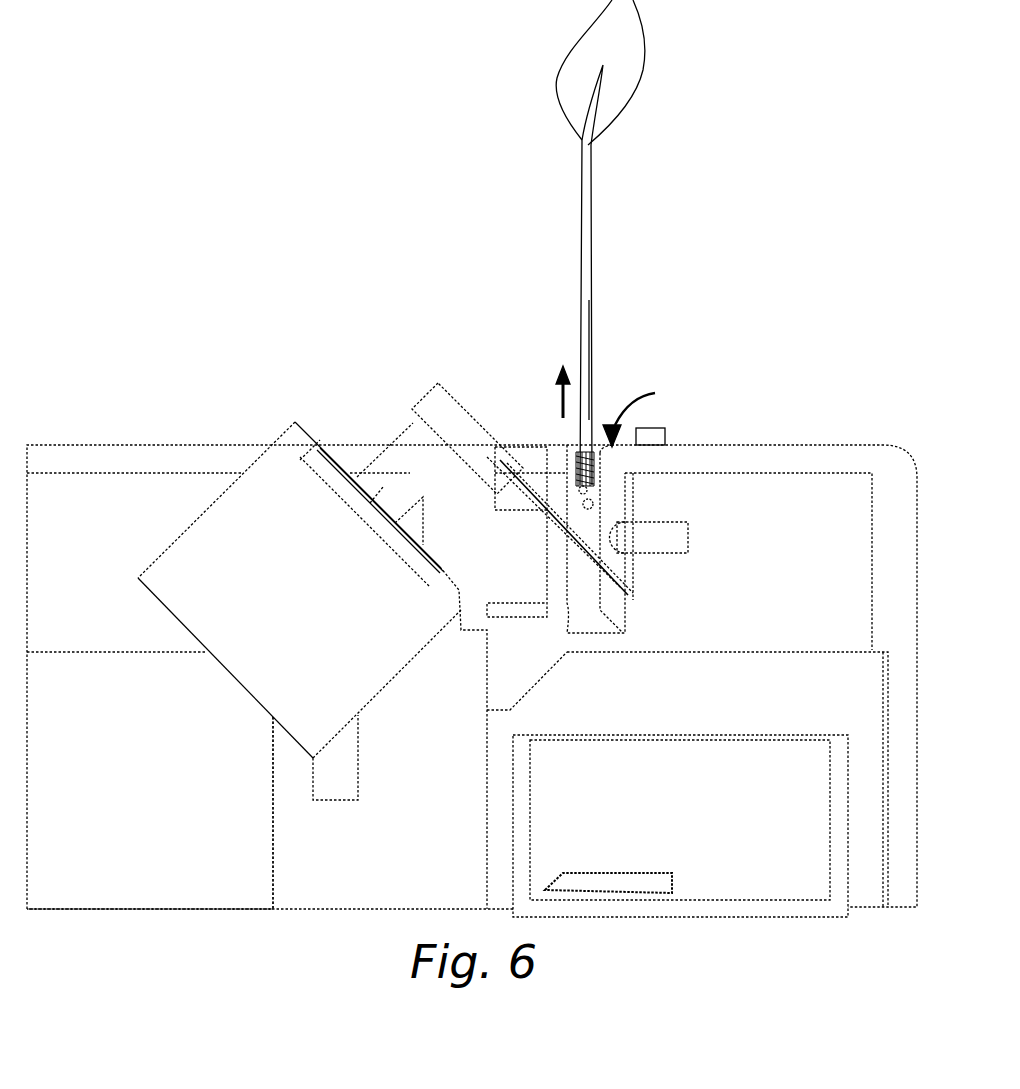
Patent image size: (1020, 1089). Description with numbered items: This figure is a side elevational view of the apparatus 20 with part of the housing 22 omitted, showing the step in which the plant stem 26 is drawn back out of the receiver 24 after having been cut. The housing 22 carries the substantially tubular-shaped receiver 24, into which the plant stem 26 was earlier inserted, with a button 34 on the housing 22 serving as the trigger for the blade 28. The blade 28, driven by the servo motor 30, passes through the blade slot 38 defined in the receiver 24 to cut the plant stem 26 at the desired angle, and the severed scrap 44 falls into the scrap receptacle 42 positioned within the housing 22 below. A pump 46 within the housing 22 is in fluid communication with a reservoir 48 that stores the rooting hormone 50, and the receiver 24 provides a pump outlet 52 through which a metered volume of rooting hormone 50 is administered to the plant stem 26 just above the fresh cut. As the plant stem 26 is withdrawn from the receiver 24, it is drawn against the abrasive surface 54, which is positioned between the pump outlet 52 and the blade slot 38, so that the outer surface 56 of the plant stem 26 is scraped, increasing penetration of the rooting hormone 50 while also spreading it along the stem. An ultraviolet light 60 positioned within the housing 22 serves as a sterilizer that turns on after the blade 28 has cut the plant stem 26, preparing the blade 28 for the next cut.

The apparatus 20 is at (160, 295).
The housing 22 is at (79, 462).
The receiver 24 is at (648, 411).
The plant stem 26 is at (615, 265).
The blade 28 is at (547, 502).
The servo motor 30 is at (277, 512).
The button 34 is at (665, 437).
The blade slot 38 is at (575, 558).
The scrap receptacle 42 is at (750, 870).
The scrap 44 is at (641, 883).
The pump 46 is at (441, 523).
The reservoir 48 is at (350, 880).
The rooting hormone 50 is at (583, 440).
The pump outlet 52 is at (580, 489).
The abrasive surface 54 is at (597, 503).
The outer surface 56 is at (584, 354).
The ultraviolet light 60 is at (617, 540).